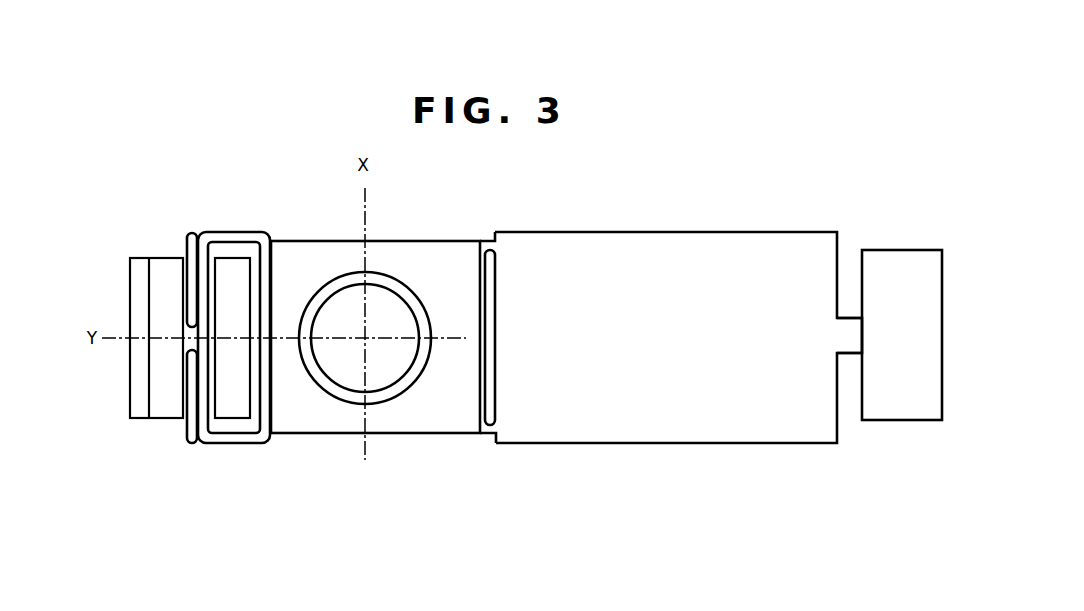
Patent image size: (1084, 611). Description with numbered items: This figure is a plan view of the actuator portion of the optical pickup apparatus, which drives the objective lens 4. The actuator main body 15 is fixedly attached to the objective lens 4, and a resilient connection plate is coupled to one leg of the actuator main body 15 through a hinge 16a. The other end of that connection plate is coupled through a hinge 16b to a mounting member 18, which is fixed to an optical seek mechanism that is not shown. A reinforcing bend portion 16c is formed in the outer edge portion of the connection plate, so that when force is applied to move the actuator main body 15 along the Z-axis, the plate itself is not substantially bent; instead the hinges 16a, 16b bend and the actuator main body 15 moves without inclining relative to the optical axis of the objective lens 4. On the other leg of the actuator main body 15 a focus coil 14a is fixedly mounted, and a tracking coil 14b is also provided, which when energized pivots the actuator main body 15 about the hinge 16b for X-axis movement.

The objective lens 4 is at (418, 372).
The focus coil 14a is at (223, 232).
The tracking coil 14b is at (192, 233).
The actuator main body 15 is at (395, 244).
The hinge 16a is at (484, 240).
The hinge 16b is at (843, 322).
The reinforcing bend portion 16c is at (682, 236).
The mounting member 18 is at (898, 250).